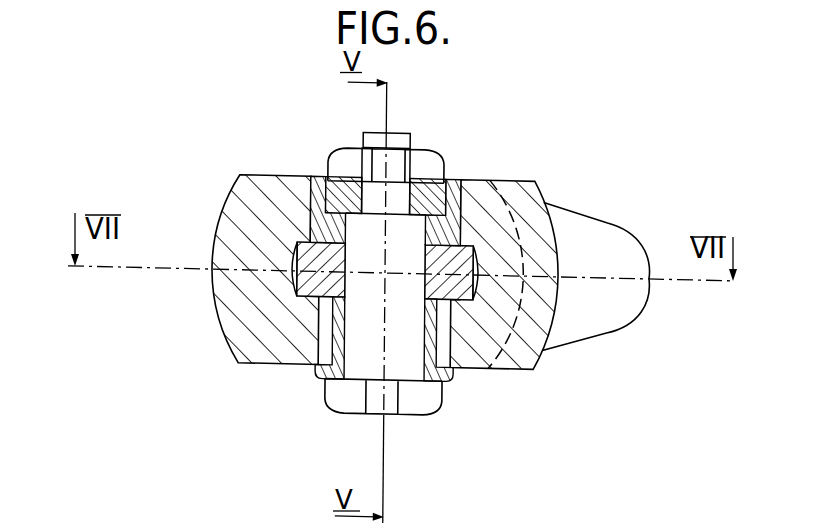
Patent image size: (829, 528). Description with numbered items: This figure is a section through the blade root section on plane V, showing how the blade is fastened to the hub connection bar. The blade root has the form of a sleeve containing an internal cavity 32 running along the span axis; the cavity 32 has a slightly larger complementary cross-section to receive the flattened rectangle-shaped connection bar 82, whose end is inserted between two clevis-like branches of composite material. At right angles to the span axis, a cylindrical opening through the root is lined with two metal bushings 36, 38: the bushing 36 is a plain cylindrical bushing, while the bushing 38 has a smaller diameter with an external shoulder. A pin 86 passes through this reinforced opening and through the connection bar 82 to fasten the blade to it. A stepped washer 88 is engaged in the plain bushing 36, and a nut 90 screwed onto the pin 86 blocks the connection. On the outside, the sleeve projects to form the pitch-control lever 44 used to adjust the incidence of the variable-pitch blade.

The bushing 36 is at (307, 177).
The nut 90 is at (350, 163).
The stepped washer 88 is at (445, 182).
The connection bar 82 is at (489, 183).
The internal cavity 32 is at (291, 281).
The bushing 38 is at (320, 377).
The pin 86 is at (405, 358).
The pitch-control lever 44 is at (583, 315).